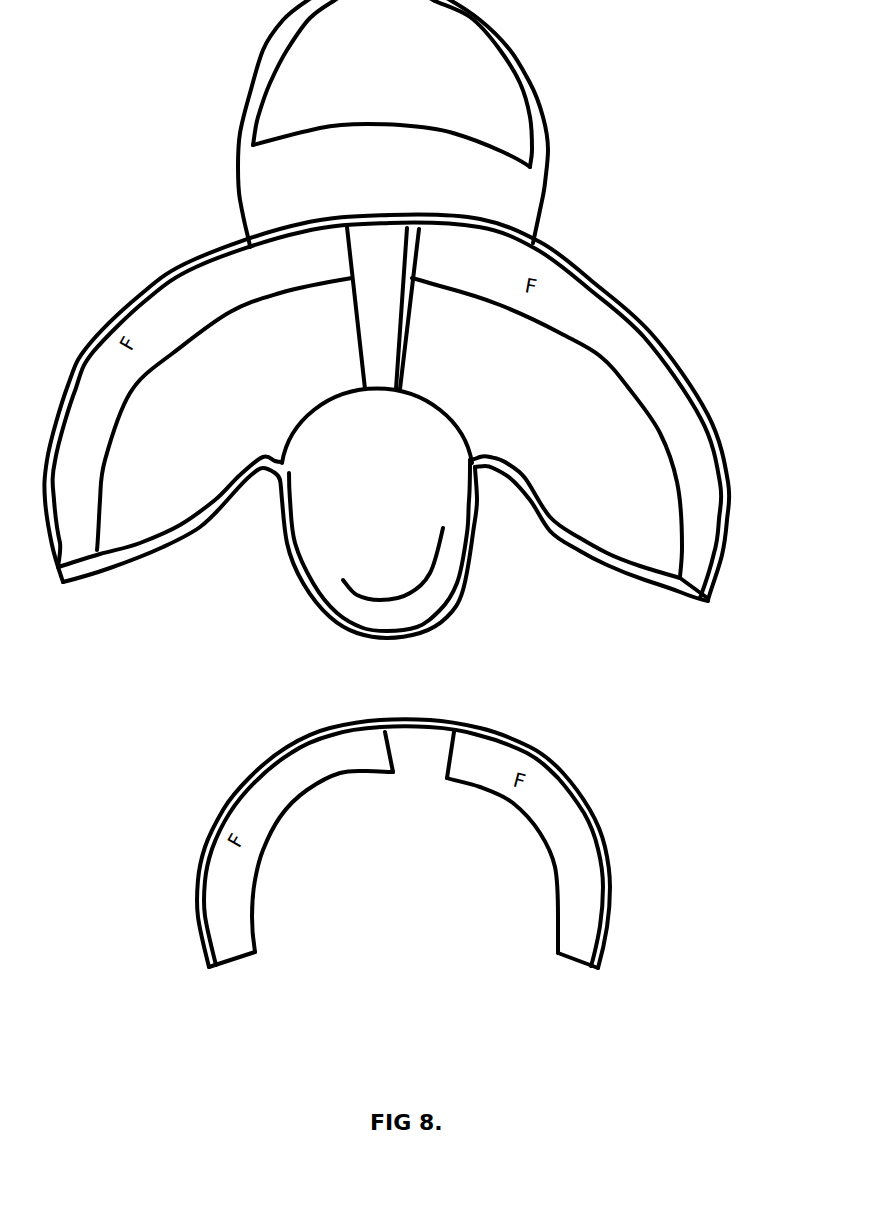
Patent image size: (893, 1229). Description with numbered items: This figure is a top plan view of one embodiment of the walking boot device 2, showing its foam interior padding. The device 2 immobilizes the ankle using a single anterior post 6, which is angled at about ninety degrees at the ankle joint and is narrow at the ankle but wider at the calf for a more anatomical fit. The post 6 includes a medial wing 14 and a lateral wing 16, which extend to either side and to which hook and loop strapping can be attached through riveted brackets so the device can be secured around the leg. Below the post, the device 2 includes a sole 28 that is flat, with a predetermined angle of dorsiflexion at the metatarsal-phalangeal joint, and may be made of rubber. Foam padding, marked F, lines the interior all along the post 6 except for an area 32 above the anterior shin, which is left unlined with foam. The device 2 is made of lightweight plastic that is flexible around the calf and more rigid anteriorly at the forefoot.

The walking boot device 2 is at (660, 204).
The anterior post 6 is at (555, 257).
The medial wing 14 is at (143, 552).
The lateral wing 16 is at (640, 590).
The sole 28 is at (465, 588).
The area above anterior shin 32 is at (383, 272).